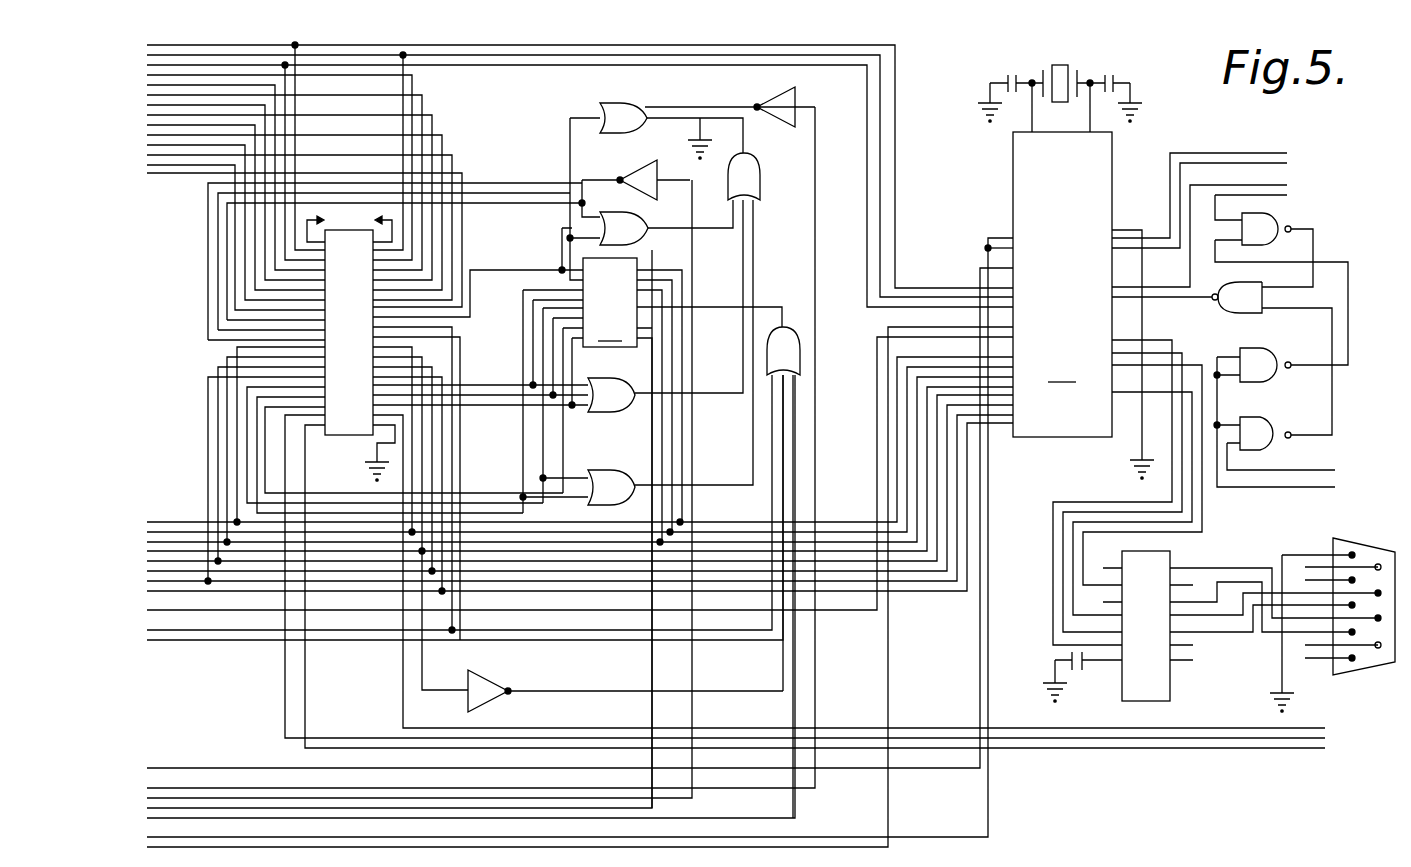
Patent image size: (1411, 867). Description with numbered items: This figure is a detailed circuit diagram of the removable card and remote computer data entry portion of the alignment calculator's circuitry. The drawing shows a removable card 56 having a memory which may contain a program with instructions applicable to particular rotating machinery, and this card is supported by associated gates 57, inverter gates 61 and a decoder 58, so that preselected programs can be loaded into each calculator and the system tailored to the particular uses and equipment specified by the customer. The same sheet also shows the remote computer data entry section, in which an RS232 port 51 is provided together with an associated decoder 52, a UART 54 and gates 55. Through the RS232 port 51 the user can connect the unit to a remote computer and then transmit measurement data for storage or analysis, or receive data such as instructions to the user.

The RS232 port 51 is at (1373, 550).
The decoder 52 is at (1170, 683).
The UART 54 is at (1132, 355).
The gates 55 is at (1265, 220).
The removable card 56 is at (357, 435).
The gates 57 is at (620, 108).
The decoder 58 is at (602, 533).
The inverter gates 61 is at (780, 90).